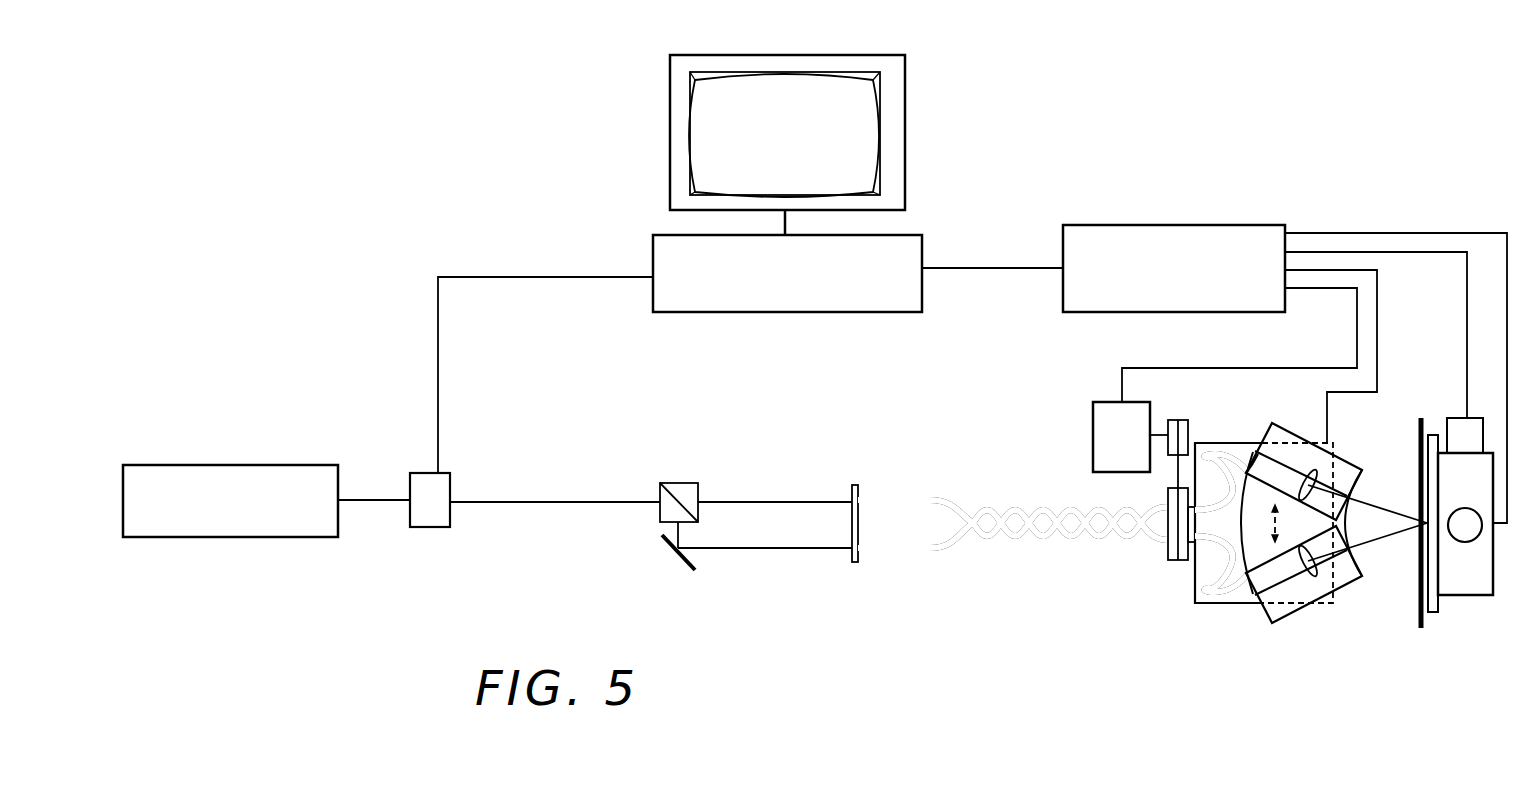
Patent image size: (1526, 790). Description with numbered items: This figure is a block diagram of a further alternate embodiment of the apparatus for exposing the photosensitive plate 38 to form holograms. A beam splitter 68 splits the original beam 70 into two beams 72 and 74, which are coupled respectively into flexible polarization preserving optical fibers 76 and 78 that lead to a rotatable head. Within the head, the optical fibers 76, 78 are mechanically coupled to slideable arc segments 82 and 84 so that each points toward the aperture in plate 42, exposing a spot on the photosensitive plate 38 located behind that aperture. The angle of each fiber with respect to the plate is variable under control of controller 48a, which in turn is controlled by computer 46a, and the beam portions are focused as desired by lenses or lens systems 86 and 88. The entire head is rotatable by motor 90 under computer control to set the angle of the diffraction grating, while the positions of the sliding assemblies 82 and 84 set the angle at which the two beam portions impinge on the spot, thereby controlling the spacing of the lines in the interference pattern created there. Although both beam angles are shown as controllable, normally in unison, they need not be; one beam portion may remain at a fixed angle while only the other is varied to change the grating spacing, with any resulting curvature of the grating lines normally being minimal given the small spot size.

The computer 46a is at (787, 273).
The controller 48a is at (1174, 268).
The original beam 70 is at (495, 500).
The beam splitter 68 is at (662, 482).
The beam 72 is at (725, 501).
The beam 74 is at (752, 552).
The optical fiber 76 is at (880, 498).
The optical fiber 78 is at (892, 549).
The motor 90 is at (1092, 432).
The slideable arc segment 82 is at (1280, 428).
The lens 86 is at (1338, 468).
The slideable arc segment 84 is at (1262, 602).
The lens 88 is at (1315, 602).
The plate 42 is at (1418, 598).
The photosensitive plate 38 is at (1417, 612).